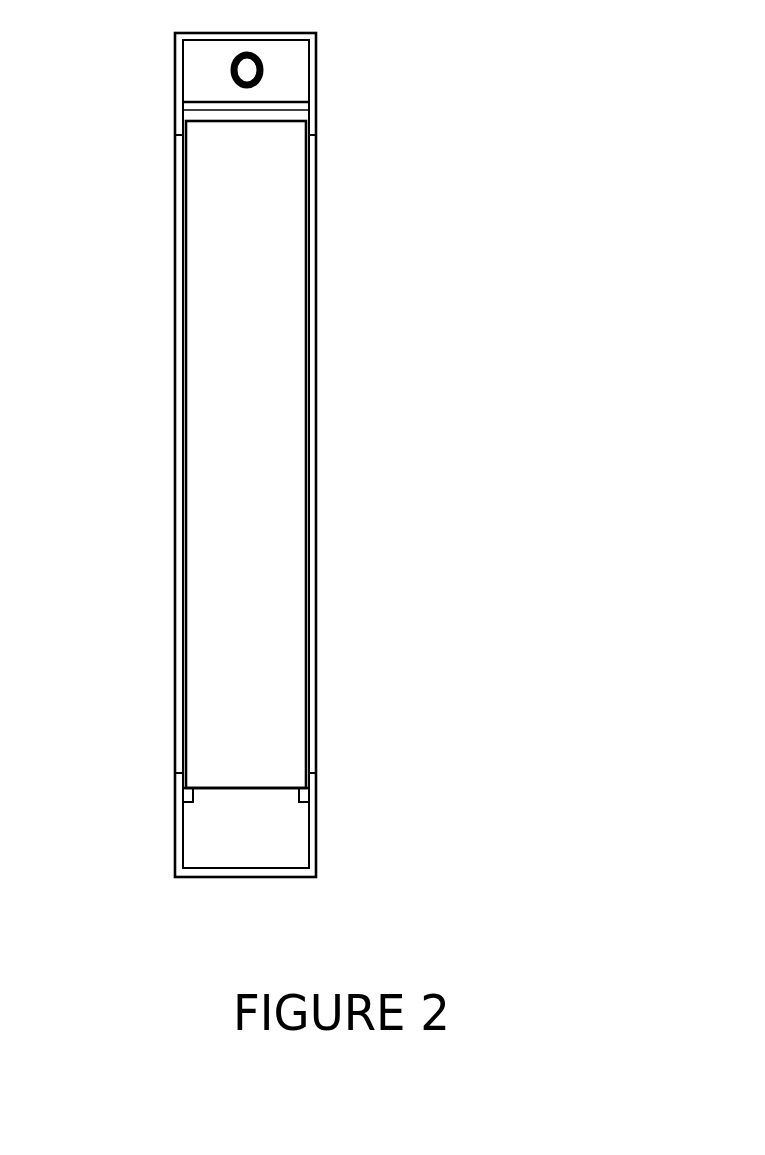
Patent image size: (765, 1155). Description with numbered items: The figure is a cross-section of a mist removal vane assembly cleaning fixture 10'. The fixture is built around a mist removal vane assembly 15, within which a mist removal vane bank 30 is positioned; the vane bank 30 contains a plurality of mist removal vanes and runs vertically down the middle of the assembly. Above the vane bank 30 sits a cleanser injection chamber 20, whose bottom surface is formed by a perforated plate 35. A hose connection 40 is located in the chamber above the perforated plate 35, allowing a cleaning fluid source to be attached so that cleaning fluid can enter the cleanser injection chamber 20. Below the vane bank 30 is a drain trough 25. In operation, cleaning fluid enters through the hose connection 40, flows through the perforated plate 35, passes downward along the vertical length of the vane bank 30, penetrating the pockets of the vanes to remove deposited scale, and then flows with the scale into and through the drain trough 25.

The mist removal vane assembly cleaning fixture 10' is at (247, 443).
The mist removal vane assembly 15 is at (330, 660).
The cleanser injection chamber 20 is at (303, 54).
The hose connection 40 is at (284, 84).
The perforated plate 35 is at (300, 120).
The mist removal vane bank 30 is at (277, 438).
The drain trough 25 is at (277, 825).